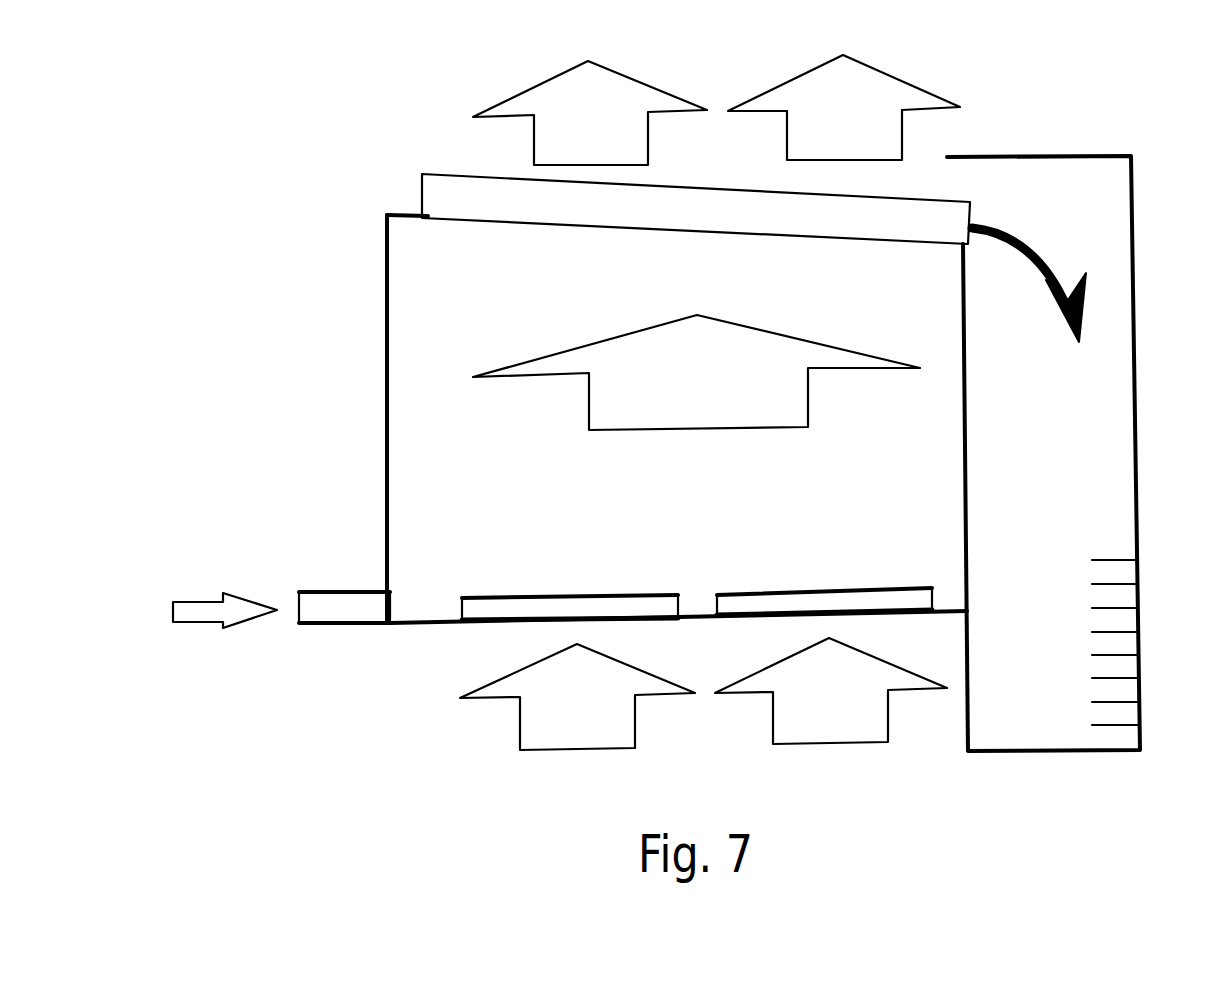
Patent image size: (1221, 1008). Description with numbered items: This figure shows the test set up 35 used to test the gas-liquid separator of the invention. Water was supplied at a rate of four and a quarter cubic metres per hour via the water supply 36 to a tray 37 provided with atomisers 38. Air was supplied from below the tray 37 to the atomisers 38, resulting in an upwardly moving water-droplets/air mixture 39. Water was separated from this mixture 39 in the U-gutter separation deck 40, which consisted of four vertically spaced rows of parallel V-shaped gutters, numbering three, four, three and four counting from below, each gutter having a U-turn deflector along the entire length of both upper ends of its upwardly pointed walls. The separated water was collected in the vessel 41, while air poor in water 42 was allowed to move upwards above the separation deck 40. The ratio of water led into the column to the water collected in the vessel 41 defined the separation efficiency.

The test set up 35 is at (328, 425).
The water supply 36 is at (307, 626).
The tray 37 is at (427, 626).
The atomisers 38 is at (742, 598).
The water-droplets/air mixture 39 is at (777, 432).
The U-gutter separation deck 40 is at (735, 230).
The vessel 41 is at (1137, 480).
The air poor in water 42 is at (770, 90).